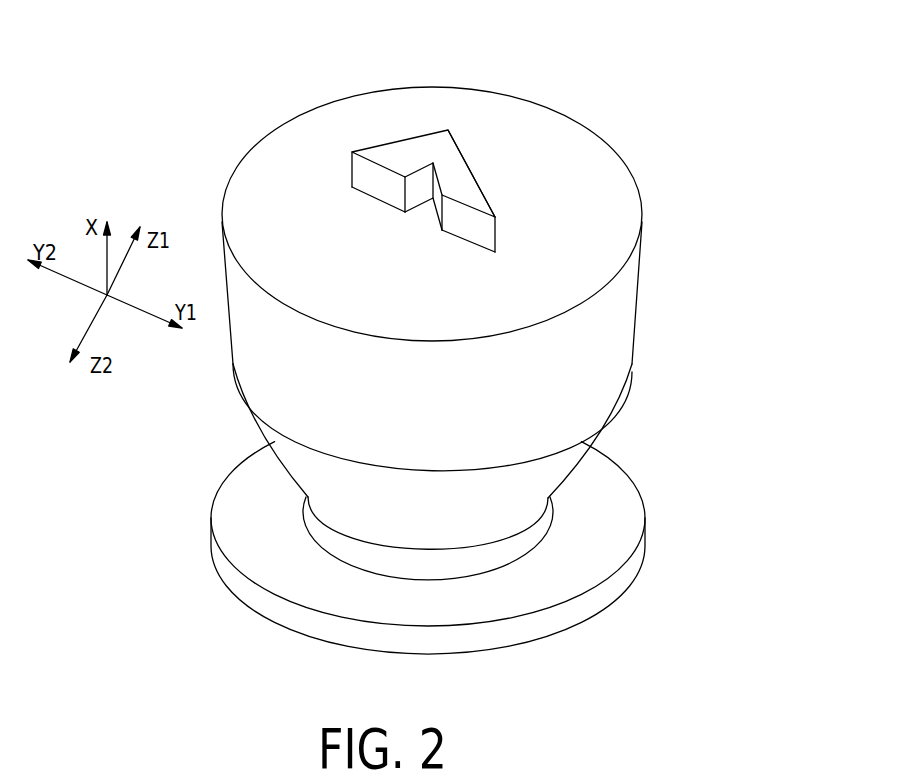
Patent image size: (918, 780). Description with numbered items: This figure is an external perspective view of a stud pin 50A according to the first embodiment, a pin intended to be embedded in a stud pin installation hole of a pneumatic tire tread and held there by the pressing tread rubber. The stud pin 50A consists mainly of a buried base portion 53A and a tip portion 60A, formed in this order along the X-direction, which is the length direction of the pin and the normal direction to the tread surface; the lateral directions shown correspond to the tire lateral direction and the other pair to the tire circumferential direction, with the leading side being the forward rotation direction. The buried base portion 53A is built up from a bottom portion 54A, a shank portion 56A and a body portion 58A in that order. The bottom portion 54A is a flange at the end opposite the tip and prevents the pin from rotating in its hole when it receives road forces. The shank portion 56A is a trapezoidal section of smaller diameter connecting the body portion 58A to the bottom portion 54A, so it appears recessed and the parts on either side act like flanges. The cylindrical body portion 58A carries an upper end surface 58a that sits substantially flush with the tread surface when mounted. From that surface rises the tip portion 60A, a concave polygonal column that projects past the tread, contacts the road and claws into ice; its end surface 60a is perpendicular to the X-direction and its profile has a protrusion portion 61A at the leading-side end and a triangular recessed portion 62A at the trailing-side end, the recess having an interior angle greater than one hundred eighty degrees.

The stud pin 50A is at (770, 78).
The buried base portion 53A is at (768, 353).
The bottom portion 54A is at (625, 512).
The shank portion 56A is at (520, 510).
The body portion 58A is at (595, 373).
The upper end surface 58a is at (560, 192).
The tip portion 60A is at (405, 135).
The end surface 60a is at (453, 160).
The protrusion portion 61A is at (461, 116).
The recessed portion 62A is at (408, 198).